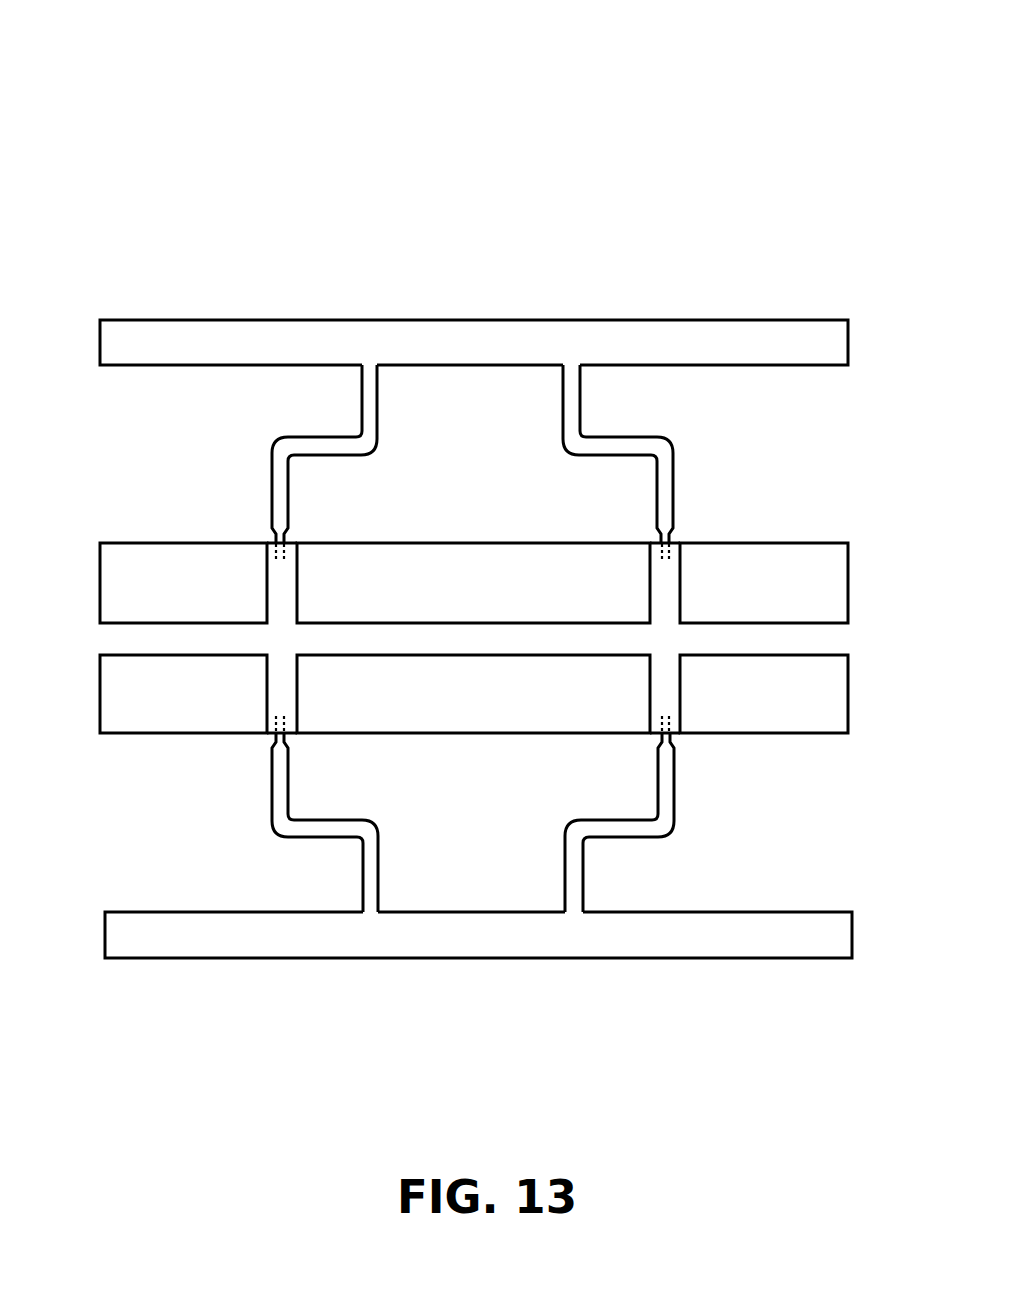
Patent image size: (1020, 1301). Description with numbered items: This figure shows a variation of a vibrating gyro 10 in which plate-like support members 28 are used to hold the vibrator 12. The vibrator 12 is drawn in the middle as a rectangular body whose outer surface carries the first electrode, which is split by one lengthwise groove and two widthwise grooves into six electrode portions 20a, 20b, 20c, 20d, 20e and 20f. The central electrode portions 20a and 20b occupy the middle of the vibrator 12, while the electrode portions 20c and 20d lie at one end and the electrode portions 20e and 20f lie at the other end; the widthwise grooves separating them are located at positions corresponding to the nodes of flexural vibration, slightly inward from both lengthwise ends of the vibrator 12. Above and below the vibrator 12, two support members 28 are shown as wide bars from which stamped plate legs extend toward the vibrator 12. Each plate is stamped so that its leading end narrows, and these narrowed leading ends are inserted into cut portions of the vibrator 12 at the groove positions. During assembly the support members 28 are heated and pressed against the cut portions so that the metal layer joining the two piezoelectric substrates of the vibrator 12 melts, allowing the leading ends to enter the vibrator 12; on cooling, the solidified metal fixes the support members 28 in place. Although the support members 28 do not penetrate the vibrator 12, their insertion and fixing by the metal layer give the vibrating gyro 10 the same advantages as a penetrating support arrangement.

The vibrating gyro 10 is at (166, 195).
The vibrator 12 is at (506, 634).
The electrode portion 20a is at (468, 565).
The electrode portion 20b is at (460, 700).
The electrode portion 20c is at (155, 565).
The electrode portion 20d is at (163, 700).
The electrode portion 20e is at (748, 575).
The electrode portion 20f is at (758, 700).
The support member 28 is at (470, 328).